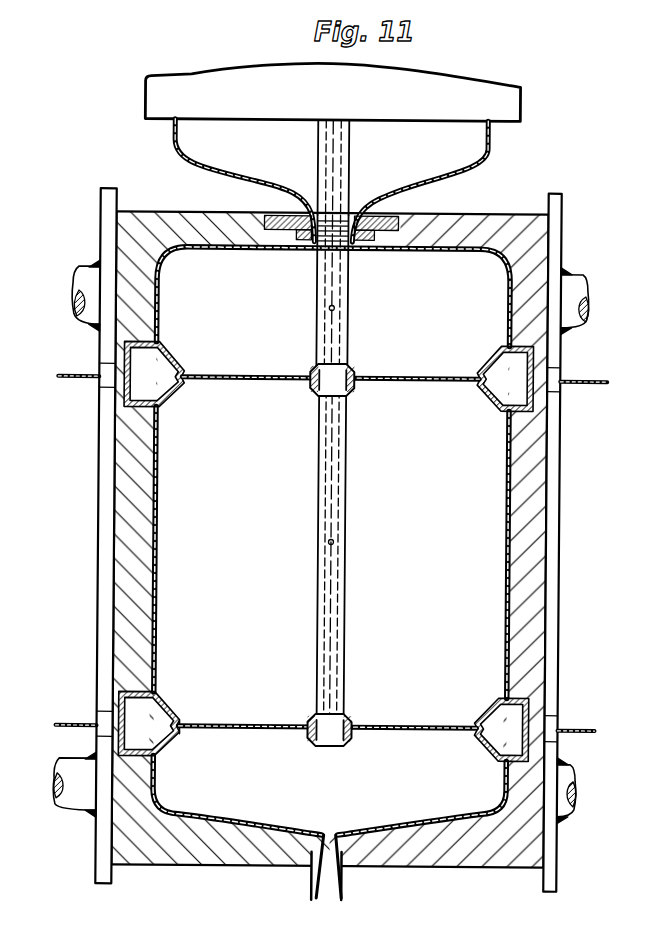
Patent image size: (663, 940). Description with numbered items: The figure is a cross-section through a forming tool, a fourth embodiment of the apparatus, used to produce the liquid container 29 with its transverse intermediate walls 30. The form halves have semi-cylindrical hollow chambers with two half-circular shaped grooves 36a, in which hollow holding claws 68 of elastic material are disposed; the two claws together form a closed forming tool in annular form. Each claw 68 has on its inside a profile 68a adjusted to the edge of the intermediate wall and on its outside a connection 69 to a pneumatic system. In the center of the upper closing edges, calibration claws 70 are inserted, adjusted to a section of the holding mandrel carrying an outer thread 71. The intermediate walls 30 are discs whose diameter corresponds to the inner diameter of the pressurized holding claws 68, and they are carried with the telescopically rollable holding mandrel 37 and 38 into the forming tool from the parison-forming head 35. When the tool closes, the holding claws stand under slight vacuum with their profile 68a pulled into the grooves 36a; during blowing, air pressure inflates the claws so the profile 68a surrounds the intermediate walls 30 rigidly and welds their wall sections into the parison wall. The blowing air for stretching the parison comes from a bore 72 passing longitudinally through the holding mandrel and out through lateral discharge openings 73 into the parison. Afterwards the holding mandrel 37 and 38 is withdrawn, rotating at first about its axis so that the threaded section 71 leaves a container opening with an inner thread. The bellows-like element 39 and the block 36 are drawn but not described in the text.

The parison-forming head 35 is at (518, 100).
The bellows 39 is at (484, 160).
The outer thread 71 is at (341, 212).
The calibration claws 70 is at (398, 216).
The holding mandrel 37 is at (347, 287).
The lateral discharge openings 73 is at (332, 309).
The hollow holding claws 68 is at (178, 396).
The profile 68a is at (182, 736).
The connection 69 is at (93, 387).
The intermediate walls 30 is at (386, 383).
The bore 72 is at (338, 463).
The block 36 is at (538, 510).
The holding mandrel 38 is at (342, 596).
The half-circular shaped grooves 36a is at (128, 692).
The liquid container 29 is at (253, 807).